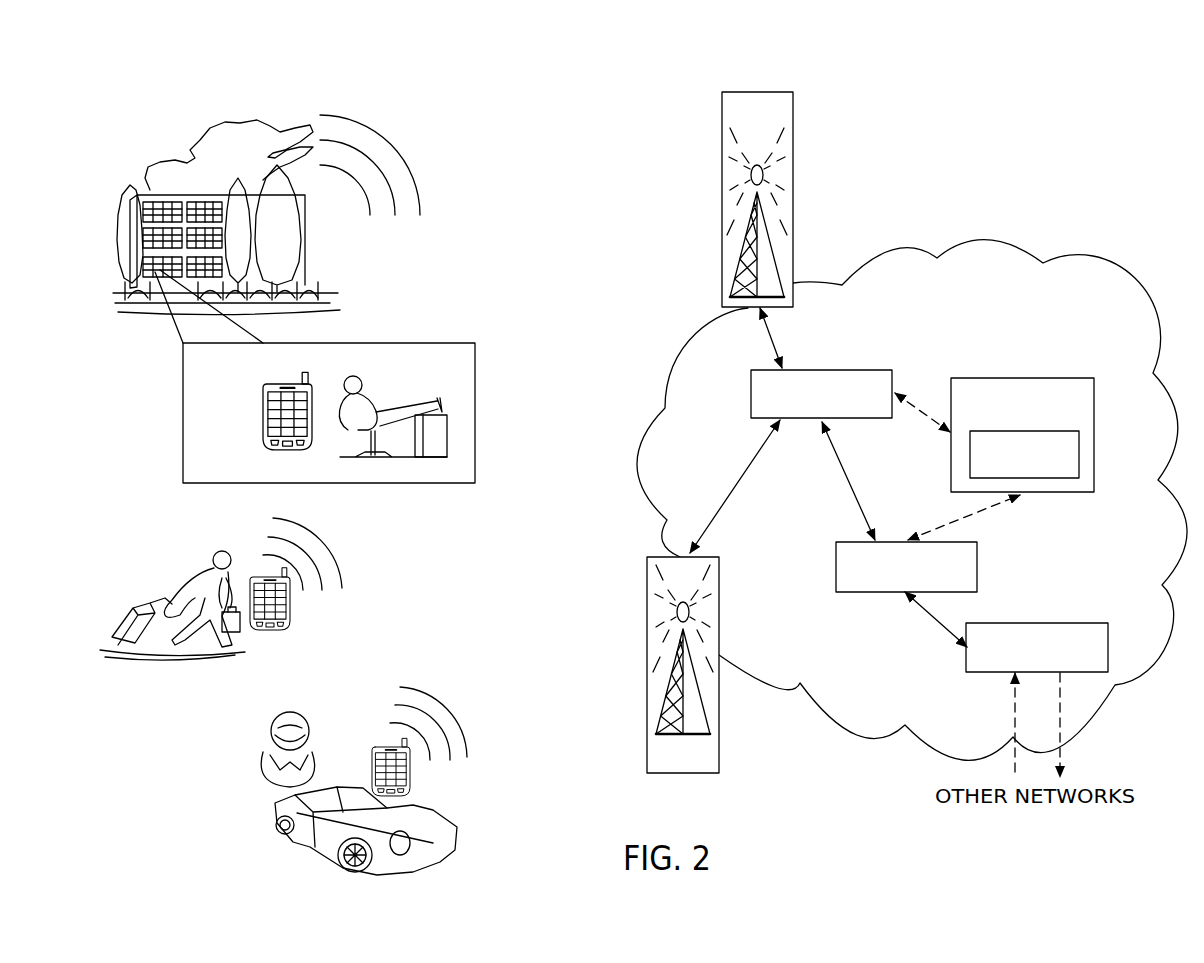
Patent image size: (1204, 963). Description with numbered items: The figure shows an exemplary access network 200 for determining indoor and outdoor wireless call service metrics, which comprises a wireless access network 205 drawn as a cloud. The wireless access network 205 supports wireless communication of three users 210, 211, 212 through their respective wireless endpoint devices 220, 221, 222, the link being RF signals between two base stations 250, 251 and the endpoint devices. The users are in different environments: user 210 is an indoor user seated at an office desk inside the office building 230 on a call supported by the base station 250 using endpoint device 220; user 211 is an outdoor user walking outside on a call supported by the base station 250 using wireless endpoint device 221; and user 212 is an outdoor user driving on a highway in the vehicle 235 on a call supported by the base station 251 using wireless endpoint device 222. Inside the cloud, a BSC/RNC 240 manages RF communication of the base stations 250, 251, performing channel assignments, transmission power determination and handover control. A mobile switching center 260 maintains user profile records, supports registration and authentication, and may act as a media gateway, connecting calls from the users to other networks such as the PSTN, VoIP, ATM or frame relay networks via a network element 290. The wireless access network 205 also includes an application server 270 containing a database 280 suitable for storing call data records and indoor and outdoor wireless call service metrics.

The access network 200 is at (1139, 162).
The wireless access network 205 is at (975, 349).
The user 210 is at (357, 378).
The user 211 is at (200, 572).
The user 212 is at (277, 722).
The wireless endpoint device 220 is at (263, 428).
The wireless endpoint device 221 is at (285, 610).
The wireless endpoint device 222 is at (372, 758).
The office building 230 is at (305, 248).
The vehicle 235 is at (323, 845).
The BSC/RNC 240 is at (870, 403).
The base station 250 is at (775, 116).
The base station 251 is at (666, 771).
The mobile switching center 260 is at (955, 577).
The application server 270 is at (1071, 411).
The database 280 is at (1069, 466).
The network element 290 is at (1086, 657).